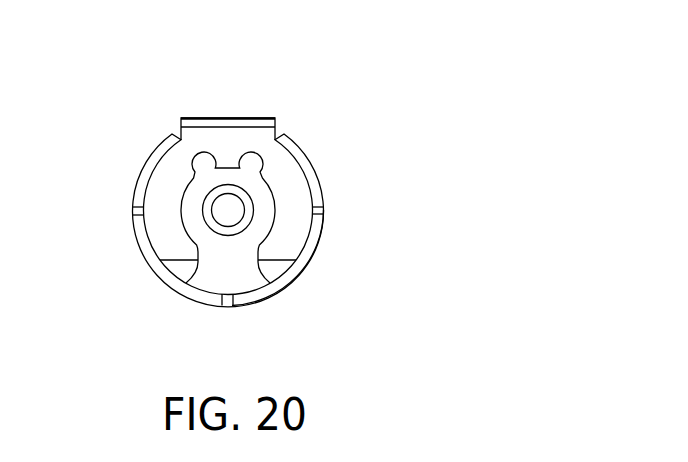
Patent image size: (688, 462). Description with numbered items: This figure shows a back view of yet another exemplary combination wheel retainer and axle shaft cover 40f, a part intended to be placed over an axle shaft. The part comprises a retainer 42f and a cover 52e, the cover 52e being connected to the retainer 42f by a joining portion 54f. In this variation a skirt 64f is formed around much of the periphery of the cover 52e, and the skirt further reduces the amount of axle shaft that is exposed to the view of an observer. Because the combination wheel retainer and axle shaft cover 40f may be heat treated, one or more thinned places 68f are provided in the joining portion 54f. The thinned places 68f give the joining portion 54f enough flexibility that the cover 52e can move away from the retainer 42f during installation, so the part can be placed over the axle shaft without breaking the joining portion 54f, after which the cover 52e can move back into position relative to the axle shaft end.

The combination wheel retainer and axle shaft cover 40f is at (301, 160).
The retainer 42f is at (285, 233).
The cover 52e is at (213, 276).
The joining portion 54f is at (198, 118).
The skirt 64f is at (310, 244).
The thinned places 68f is at (143, 211).